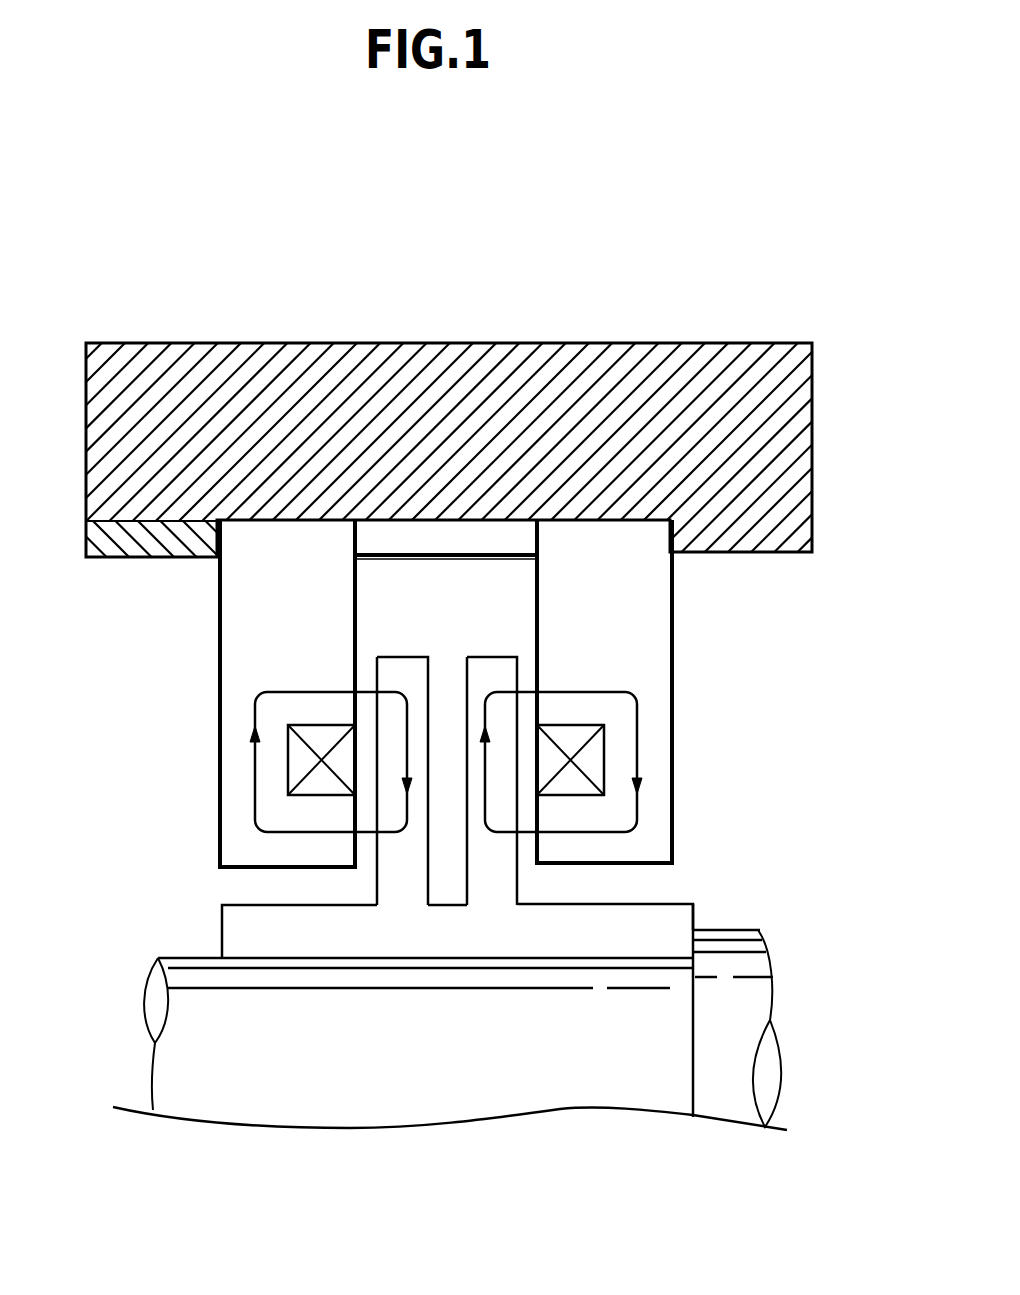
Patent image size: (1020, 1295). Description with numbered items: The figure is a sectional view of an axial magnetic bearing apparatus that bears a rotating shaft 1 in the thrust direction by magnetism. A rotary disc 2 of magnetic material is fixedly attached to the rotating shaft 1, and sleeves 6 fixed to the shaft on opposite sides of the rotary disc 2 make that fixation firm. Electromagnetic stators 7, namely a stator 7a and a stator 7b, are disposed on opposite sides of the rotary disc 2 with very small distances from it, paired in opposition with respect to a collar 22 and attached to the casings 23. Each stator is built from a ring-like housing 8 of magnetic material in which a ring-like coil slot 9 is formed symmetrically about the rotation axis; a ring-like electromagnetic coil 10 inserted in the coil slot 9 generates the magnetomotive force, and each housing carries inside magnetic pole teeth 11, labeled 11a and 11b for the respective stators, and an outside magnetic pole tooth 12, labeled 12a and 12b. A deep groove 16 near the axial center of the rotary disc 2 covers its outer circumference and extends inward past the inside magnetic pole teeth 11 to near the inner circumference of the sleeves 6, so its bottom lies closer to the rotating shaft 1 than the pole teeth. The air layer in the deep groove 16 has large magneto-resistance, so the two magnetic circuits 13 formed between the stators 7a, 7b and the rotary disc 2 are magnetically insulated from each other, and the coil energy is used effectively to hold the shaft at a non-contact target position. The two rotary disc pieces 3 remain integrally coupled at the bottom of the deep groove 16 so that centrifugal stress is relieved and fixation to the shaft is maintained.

The rotating shaft 1 is at (195, 1018).
The rotary disc 2 is at (434, 770).
The rotary disc pieces 3 is at (392, 672).
The sleeves 6 is at (255, 930).
The electromagnetic stators 7 is at (446, 517).
The electromagnetic stator 7a is at (302, 553).
The electromagnetic stator 7b is at (583, 552).
The ring-like housings 8 is at (444, 517).
The coil slots 9 is at (463, 770).
The electromagnetic coils 10 is at (290, 777).
The inside magnetic pole teeth 11 is at (448, 971).
The first gap 11a is at (358, 845).
The second gap 11b is at (538, 843).
The outside magnetic pole tooth 12 is at (597, 597).
The first thin layer 12a is at (355, 577).
The second thin layer 12b is at (538, 607).
The magnetic circuits 13 is at (253, 713).
The deep groove 16 is at (445, 893).
The collar 22 is at (439, 538).
The casings 23 is at (156, 373).